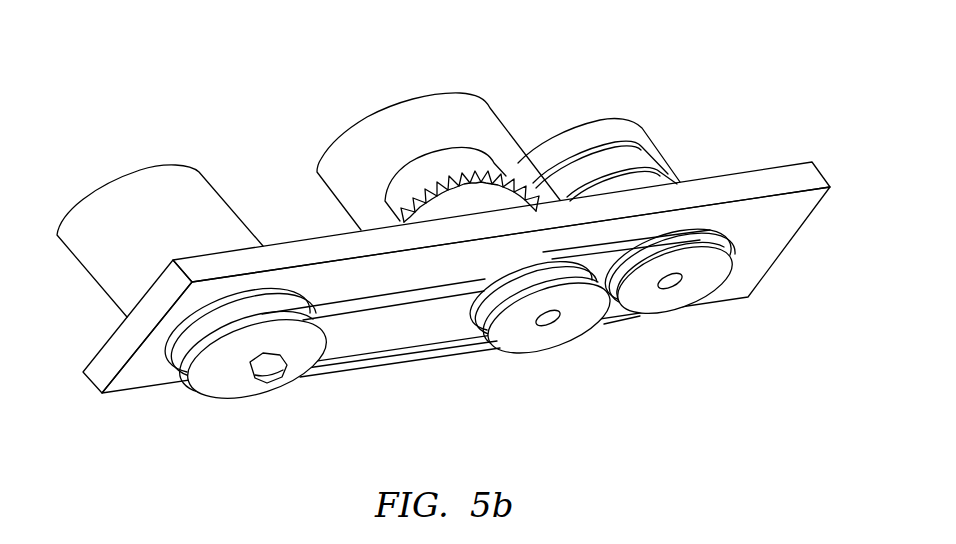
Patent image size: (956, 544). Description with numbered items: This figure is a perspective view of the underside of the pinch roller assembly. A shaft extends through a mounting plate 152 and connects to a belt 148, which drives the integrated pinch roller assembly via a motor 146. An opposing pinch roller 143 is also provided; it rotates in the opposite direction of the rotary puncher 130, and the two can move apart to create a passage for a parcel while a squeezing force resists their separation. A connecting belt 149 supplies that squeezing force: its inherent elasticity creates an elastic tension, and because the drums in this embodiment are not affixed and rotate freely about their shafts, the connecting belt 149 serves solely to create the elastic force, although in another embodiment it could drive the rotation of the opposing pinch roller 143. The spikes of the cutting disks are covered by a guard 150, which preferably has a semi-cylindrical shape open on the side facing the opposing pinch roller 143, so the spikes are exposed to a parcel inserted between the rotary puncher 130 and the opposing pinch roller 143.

The rotary puncher 130 is at (188, 92).
The opposing pinch roller 143 is at (683, 157).
The motor 146 is at (82, 283).
The belt 148 is at (401, 391).
The connecting belt 149 is at (679, 234).
The guard 150 is at (366, 114).
The mounting plate 152 is at (814, 218).